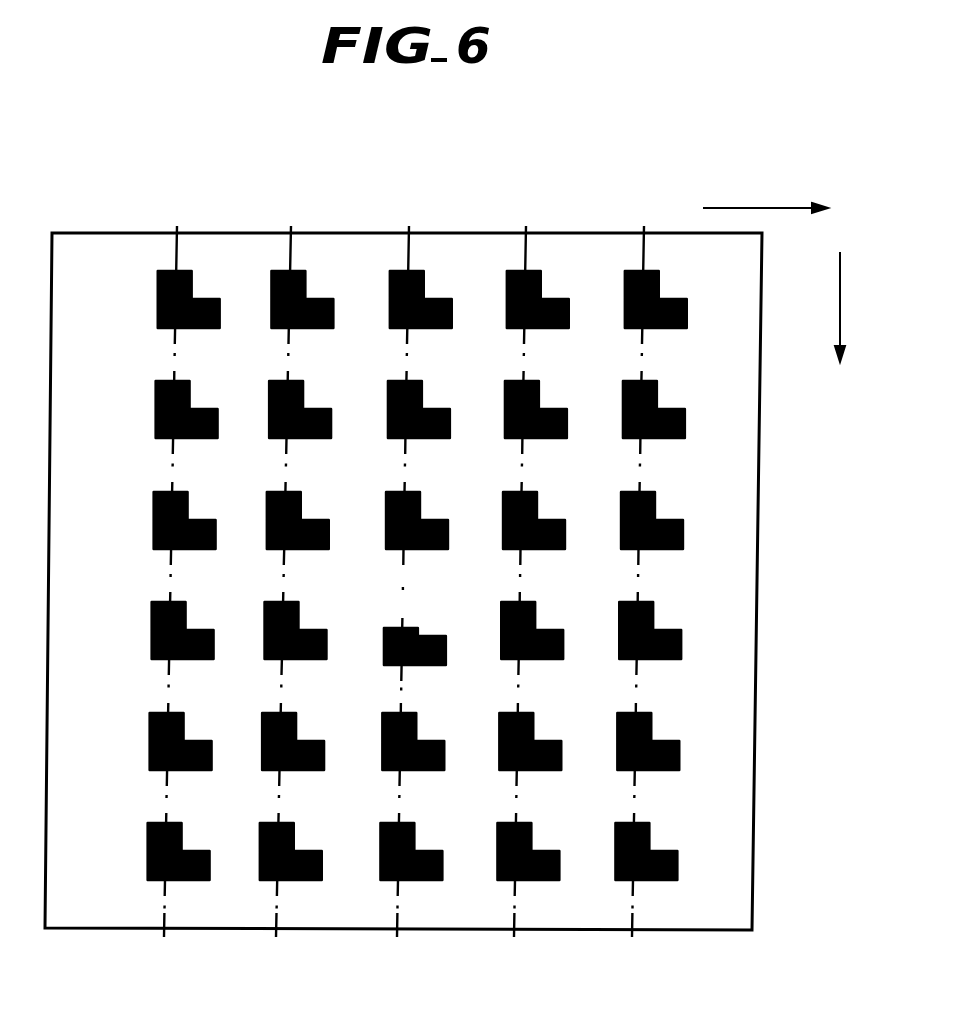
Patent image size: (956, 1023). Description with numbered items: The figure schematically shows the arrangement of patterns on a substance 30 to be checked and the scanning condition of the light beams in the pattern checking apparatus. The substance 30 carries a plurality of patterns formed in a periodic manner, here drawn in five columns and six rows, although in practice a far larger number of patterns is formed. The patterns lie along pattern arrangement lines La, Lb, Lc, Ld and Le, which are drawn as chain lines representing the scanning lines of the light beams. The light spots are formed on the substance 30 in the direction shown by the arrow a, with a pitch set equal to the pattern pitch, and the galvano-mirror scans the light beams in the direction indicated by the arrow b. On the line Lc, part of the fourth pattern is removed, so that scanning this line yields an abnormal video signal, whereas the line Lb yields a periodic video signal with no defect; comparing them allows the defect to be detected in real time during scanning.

The substance to be checked 30 is at (752, 875).
The pattern arrangement line La is at (184, 561).
The pattern arrangement line Lb is at (297, 561).
The pattern arrangement line Lc is at (415, 561).
The pattern arrangement line Ld is at (532, 561).
The pattern arrangement line Le is at (650, 561).
The arrow a is at (775, 208).
The arrow b is at (839, 323).